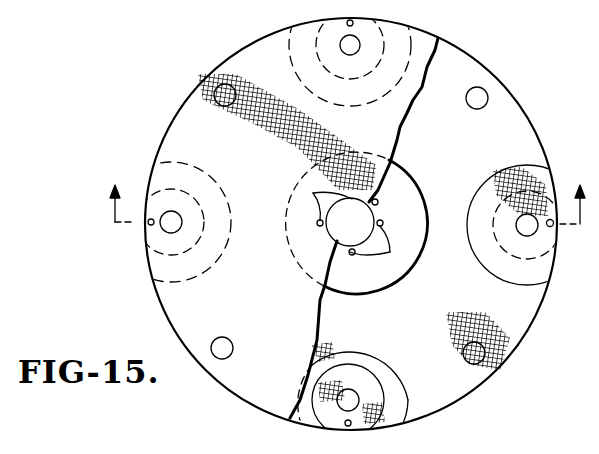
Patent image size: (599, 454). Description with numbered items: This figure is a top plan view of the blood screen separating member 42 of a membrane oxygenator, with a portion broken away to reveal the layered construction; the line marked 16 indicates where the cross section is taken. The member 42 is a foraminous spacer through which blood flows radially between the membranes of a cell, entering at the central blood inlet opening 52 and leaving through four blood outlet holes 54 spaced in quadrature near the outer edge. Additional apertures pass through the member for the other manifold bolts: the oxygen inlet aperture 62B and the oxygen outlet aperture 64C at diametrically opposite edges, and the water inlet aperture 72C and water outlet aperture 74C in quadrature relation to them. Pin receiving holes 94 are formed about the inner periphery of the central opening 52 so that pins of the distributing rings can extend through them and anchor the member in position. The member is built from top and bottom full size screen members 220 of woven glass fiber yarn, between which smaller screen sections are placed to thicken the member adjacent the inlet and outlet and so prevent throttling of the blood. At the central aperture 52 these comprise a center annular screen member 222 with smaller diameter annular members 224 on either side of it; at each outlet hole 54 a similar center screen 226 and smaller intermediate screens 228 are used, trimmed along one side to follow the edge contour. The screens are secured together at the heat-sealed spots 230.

The blood screen separating member 42 is at (157, 303).
The top and bottom full size screen members 220 is at (178, 118).
The aperture 74C is at (216, 90).
The aperture 64C is at (486, 95).
The aperture 62B is at (232, 345).
The aperture 72C is at (480, 358).
The blood outlet holes 54 is at (357, 50).
The center screen 226 is at (505, 272).
The intermediate screens 228 is at (513, 190).
The central blood inlet opening 52 is at (338, 248).
The center annular screen member 222 is at (414, 224).
The smaller diameter annular members 224 is at (383, 215).
The pin receiving holes 94 is at (347, 230).
The heat seal 230 is at (352, 21).
The section line 16 is at (349, 195).